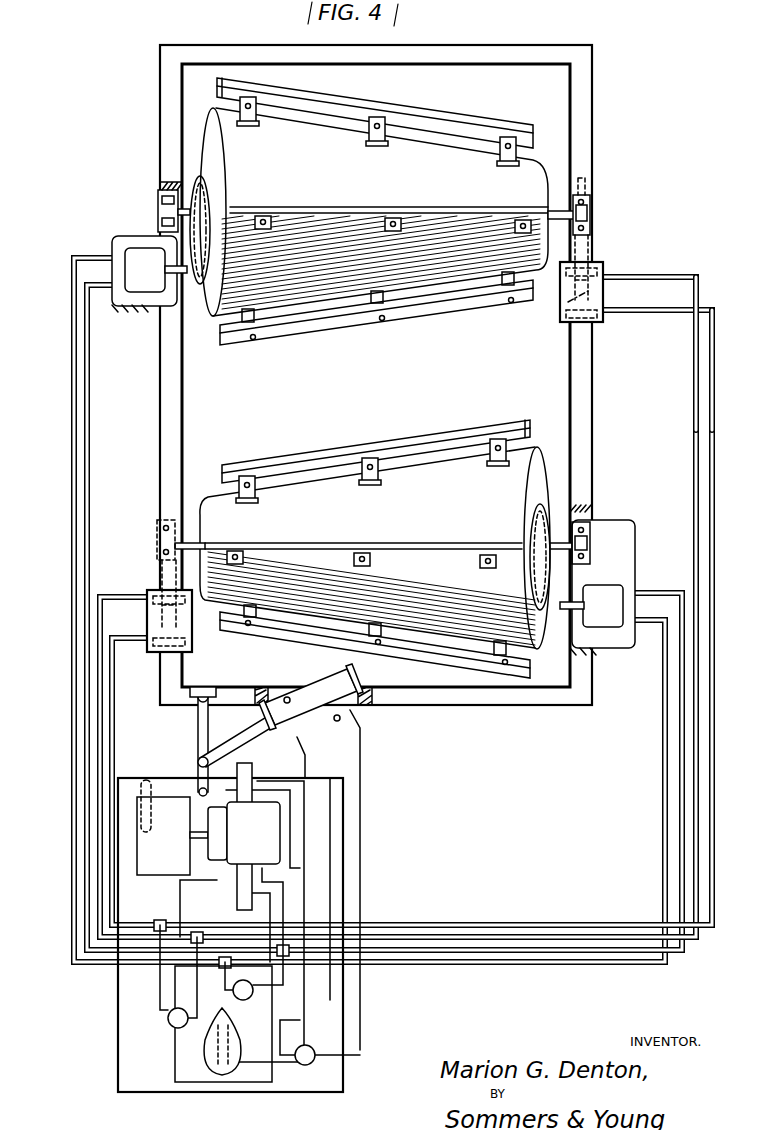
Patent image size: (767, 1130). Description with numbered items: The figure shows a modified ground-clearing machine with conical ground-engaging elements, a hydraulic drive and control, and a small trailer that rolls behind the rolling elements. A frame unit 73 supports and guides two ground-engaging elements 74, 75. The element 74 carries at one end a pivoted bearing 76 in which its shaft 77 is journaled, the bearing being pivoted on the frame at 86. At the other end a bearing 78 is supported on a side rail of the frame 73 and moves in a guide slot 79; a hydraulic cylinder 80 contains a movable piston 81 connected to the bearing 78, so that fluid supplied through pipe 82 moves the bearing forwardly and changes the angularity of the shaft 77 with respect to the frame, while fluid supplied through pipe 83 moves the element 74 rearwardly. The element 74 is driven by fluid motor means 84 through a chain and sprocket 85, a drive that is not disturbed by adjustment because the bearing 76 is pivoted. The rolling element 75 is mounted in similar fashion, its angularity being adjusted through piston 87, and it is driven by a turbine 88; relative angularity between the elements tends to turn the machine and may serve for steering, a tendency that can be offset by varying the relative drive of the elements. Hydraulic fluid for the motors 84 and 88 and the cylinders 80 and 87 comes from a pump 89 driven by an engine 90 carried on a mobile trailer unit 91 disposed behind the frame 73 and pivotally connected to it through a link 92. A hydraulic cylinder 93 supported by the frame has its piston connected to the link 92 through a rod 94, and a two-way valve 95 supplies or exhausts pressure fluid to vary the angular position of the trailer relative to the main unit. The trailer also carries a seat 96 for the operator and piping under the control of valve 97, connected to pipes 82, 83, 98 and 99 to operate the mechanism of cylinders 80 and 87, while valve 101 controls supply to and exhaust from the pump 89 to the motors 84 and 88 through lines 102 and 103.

The frame unit 73 is at (582, 106).
The ground-engaging element 74 is at (437, 160).
The rolling element 75 is at (415, 492).
The pivoted bearing 76 is at (158, 208).
The shaft 77 is at (563, 214).
The bearing 78 is at (590, 216).
The guide slot 79 is at (586, 184).
The hydraulic cylinder 80 is at (604, 296).
The movable piston 81 is at (566, 304).
The pipe 82 is at (717, 388).
The pipe 83 is at (694, 398).
The fluid motor means 84 is at (142, 286).
The chain and sprocket 85 is at (201, 285).
The pivot 86 is at (166, 190).
The piston 87 is at (190, 636).
The turbine 88 is at (610, 602).
The pump 89 is at (288, 800).
The engine 90 is at (146, 862).
The mobile trailer unit 91 is at (344, 858).
The link 92 is at (198, 733).
The hydraulic cylinder 93 is at (317, 692).
The rod 94 is at (232, 750).
The two-way valve 95 is at (300, 1066).
The seat 96 is at (215, 1062).
The valve 97 is at (170, 1025).
The pipe 98 is at (70, 850).
The pipe 99 is at (118, 740).
The valve 101 is at (236, 992).
The line 102 is at (72, 738).
The line 103 is at (78, 692).